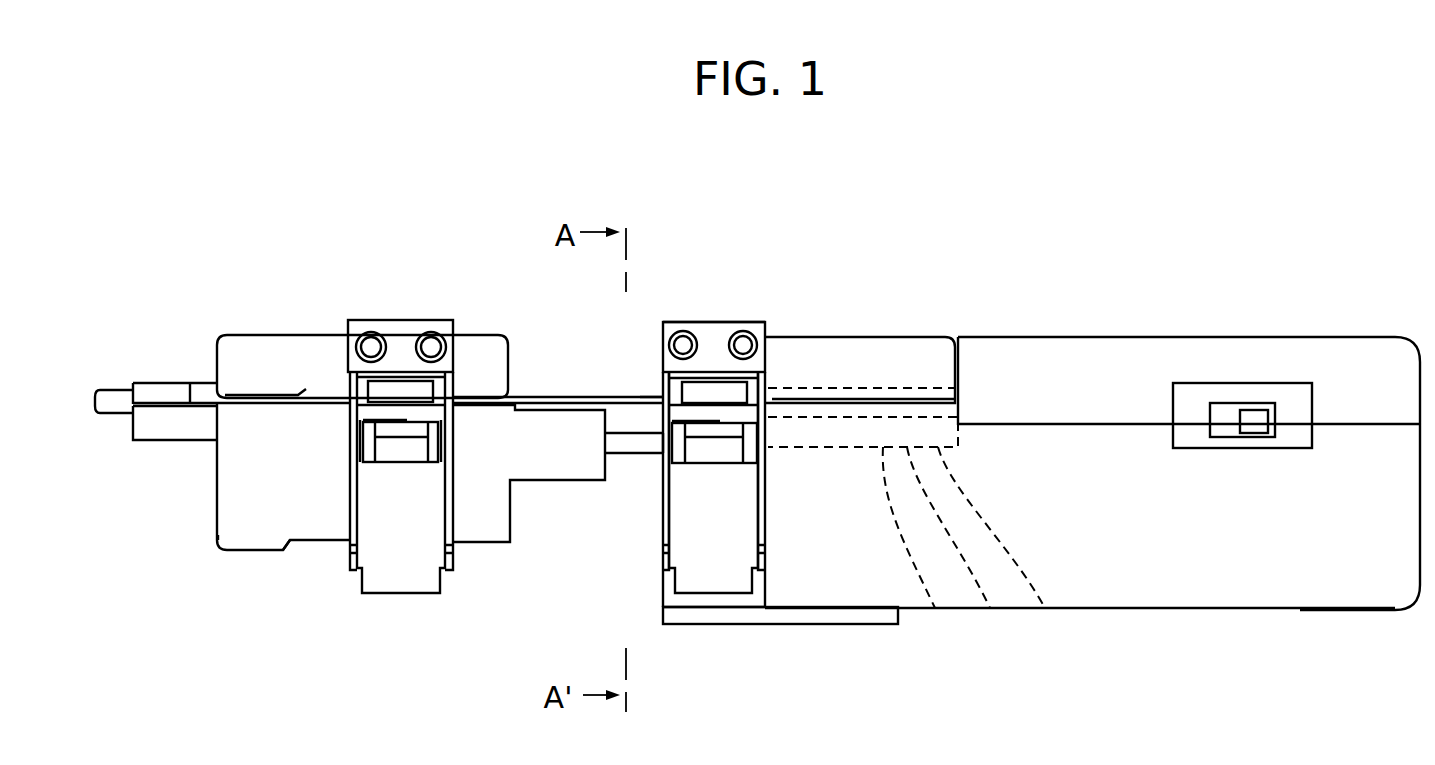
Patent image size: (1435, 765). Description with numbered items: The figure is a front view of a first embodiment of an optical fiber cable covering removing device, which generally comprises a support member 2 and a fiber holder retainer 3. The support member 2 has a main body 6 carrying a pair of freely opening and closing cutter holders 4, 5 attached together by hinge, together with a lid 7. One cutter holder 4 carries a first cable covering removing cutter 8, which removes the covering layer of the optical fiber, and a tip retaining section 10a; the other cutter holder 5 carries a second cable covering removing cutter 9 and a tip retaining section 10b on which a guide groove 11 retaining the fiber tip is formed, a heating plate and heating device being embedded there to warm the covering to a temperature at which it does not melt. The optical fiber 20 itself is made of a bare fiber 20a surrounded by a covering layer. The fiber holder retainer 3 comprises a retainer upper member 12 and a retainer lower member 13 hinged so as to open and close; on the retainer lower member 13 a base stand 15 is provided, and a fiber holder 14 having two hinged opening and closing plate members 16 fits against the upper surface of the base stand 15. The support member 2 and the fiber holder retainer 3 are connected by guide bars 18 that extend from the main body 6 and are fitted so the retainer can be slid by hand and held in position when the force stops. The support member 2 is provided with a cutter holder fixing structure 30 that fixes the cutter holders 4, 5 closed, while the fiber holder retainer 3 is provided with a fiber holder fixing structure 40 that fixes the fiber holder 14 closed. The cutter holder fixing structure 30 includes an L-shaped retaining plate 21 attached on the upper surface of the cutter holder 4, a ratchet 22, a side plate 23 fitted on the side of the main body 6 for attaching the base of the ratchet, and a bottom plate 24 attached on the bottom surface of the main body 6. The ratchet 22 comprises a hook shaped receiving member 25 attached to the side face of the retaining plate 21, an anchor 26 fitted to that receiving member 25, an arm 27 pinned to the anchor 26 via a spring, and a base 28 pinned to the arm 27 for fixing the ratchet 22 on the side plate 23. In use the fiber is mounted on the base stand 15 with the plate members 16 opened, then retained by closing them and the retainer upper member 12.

The support member 2 is at (1148, 620).
The fiber holder retainer 3 is at (270, 565).
The cutter holder 4 is at (930, 337).
The cutter holder 5 is at (990, 608).
The main body 6 is at (1340, 590).
The lid 7 is at (1340, 337).
The first cable covering removing cutter 8 is at (648, 395).
The second cable covering removing cutter 9 is at (662, 440).
The tip retaining section 10a is at (883, 447).
The tip retaining section 10b is at (1045, 608).
The guide groove 11 is at (935, 608).
The retainer upper member 12 is at (253, 335).
The retainer lower member 13 is at (247, 530).
The fiber holder 14 is at (184, 455).
The base stand 15 is at (150, 440).
The opening and closing plate member 16 is at (160, 383).
The guide bar 18 is at (627, 447).
The optical fiber 20 is at (118, 388).
The bare fiber 20a is at (575, 392).
The L-shaped retaining plate 21 is at (695, 322).
The ratchet 22 is at (429, 310).
The side plate 23 is at (757, 582).
The bottom plate 24 is at (862, 625).
The hook shaped receiving member 25 is at (405, 392).
The anchor 26 is at (440, 397).
The arm 27 is at (398, 573).
The base 28 is at (407, 420).
The cutter holder fixing structure 30 is at (738, 310).
The fiber holder fixing structure 40 is at (372, 308).